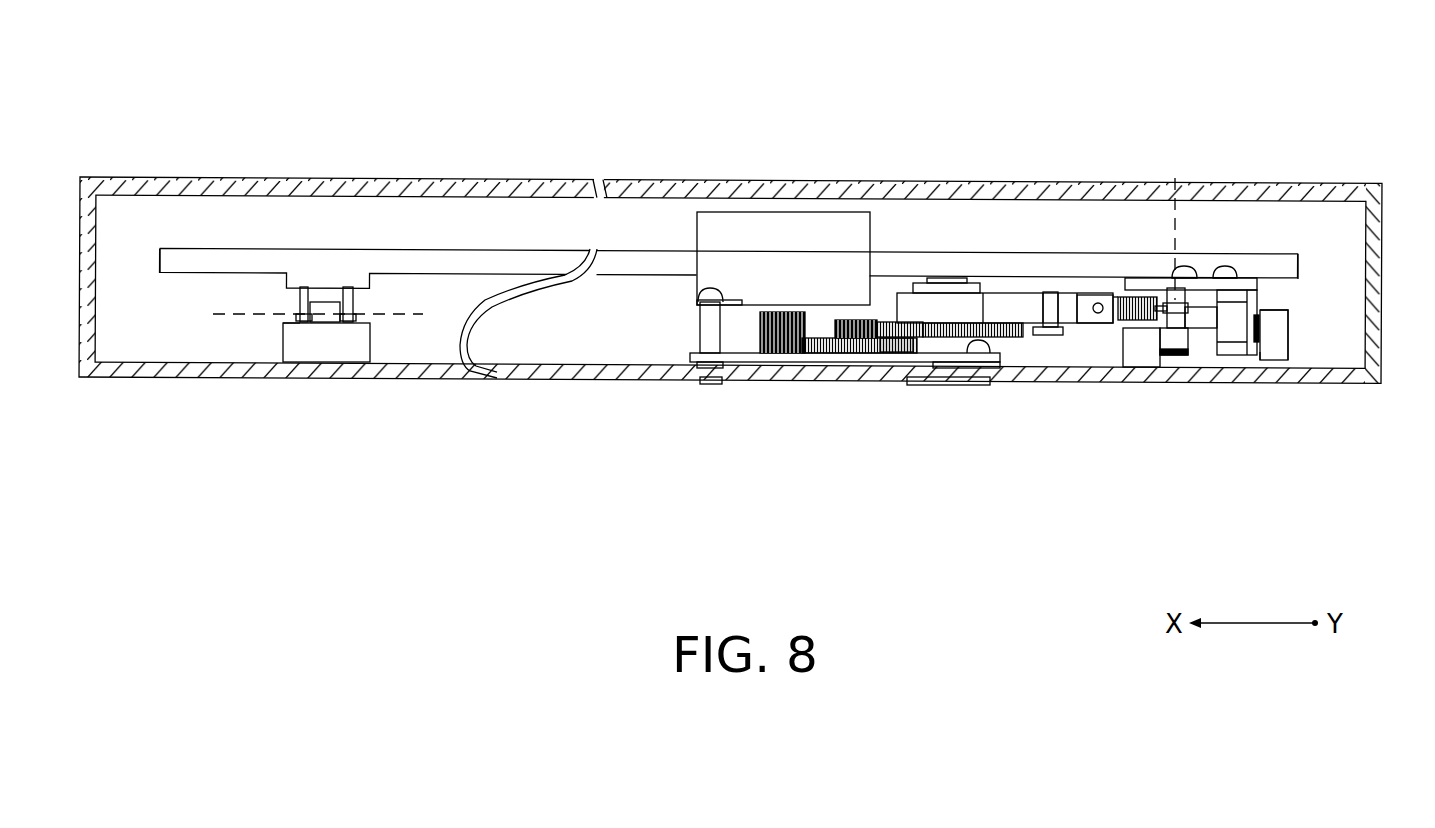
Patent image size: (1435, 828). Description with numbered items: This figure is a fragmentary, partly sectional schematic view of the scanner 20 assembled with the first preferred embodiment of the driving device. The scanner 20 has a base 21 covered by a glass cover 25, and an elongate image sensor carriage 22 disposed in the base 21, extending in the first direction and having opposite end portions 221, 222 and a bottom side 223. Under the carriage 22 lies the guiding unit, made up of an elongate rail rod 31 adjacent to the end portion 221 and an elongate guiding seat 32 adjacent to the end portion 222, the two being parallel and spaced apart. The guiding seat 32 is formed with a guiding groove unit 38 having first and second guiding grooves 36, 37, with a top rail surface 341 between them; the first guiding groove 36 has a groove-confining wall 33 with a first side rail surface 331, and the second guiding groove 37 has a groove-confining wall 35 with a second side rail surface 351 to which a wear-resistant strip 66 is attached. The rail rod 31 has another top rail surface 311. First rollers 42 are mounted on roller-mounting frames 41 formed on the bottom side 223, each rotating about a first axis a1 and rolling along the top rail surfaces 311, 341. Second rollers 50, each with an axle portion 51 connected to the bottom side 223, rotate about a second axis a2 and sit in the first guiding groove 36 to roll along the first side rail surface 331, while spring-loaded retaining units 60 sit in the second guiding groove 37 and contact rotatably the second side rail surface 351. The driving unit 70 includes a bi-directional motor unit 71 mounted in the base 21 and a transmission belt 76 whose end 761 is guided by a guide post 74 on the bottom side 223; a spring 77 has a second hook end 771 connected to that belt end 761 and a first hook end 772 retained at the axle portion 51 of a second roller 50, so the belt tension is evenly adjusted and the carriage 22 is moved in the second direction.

The scanner 20 is at (102, 382).
The base 21 is at (260, 364).
The image sensor carriage 22 is at (502, 240).
The glass cover 25 is at (205, 178).
The end portion 221 is at (167, 257).
The end portion 222 is at (1300, 256).
The bottom side 223 is at (445, 274).
The rail rod 31 is at (378, 353).
The top rail surface 311 is at (283, 323).
The guiding seat 32 is at (1350, 384).
The groove-confining wall 33 is at (1135, 338).
The first side rail surface 331 is at (1162, 357).
The groove-confining wall 35 is at (1290, 356).
The second side rail surface 351 is at (1258, 353).
The first guiding groove 36 is at (1181, 356).
The second guiding groove 37 is at (1237, 356).
The guiding groove unit 38 is at (1237, 455).
The roller-mounting frame 41 is at (352, 295).
The first roller 42 is at (323, 301).
The second roller 50 is at (1183, 280).
The axle portion 51 is at (1168, 330).
The spring-loaded retaining unit 60 is at (1266, 295).
The wear-resistant strip 66 is at (1258, 327).
The driving unit 70 is at (694, 288).
The bi-directional motor unit 71 is at (760, 297).
The guide post 74 is at (1050, 322).
The transmission belt 76 is at (1045, 330).
The end of transmission belt 761 is at (1090, 316).
The spring 77 is at (1127, 296).
The second hook end 771 is at (1112, 295).
The first hook end 772 is at (1162, 306).
The top rail surface 341 is at (1220, 268).
The first axis a1 is at (303, 316).
The second axis a2 is at (1176, 223).